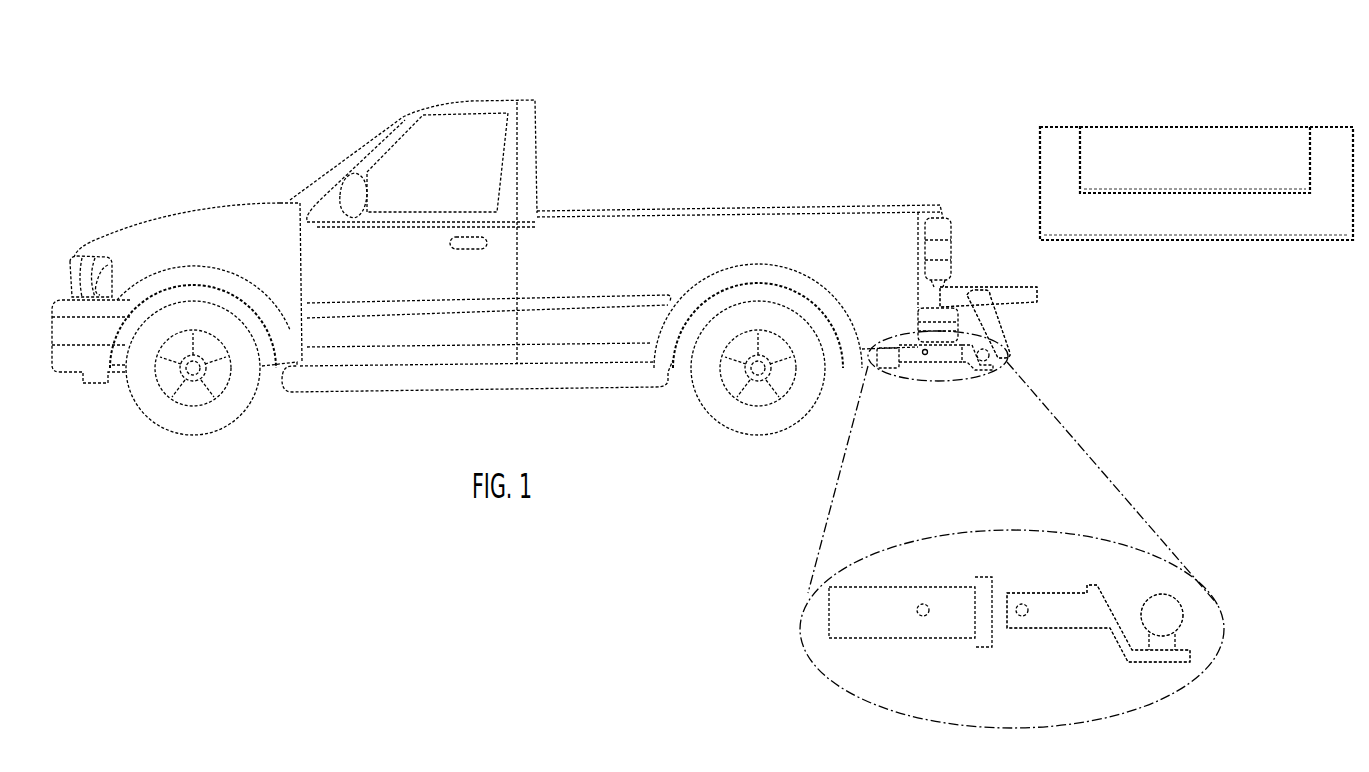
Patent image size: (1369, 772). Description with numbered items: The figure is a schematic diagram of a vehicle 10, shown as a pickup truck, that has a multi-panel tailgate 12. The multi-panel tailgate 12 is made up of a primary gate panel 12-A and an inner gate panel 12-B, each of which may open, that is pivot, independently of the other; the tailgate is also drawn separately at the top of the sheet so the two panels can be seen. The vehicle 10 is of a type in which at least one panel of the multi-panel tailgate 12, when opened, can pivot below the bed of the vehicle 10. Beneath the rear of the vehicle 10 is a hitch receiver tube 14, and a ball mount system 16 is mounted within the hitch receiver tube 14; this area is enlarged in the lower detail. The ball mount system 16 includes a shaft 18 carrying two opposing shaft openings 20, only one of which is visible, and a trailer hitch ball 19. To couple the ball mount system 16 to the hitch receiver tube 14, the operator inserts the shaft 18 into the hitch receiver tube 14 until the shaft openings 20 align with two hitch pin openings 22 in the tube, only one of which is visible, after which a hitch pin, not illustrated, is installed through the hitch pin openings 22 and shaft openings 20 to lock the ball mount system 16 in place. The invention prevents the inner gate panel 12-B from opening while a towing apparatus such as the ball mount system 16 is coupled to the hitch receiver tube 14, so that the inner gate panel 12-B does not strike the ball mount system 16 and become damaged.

The vehicle 10 is at (537, 138).
The multi-panel tailgate 12 is at (1057, 73).
The primary gate panel 12-A is at (1046, 150).
The inner gate panel 12-B is at (1157, 142).
The hitch receiver tube 14 is at (900, 366).
The ball mount system 16 is at (1112, 560).
The shaft 18 is at (1055, 593).
The trailer hitch ball 19 is at (1182, 610).
The shaft opening 20 is at (1022, 604).
The hitch pin opening 22 is at (923, 604).